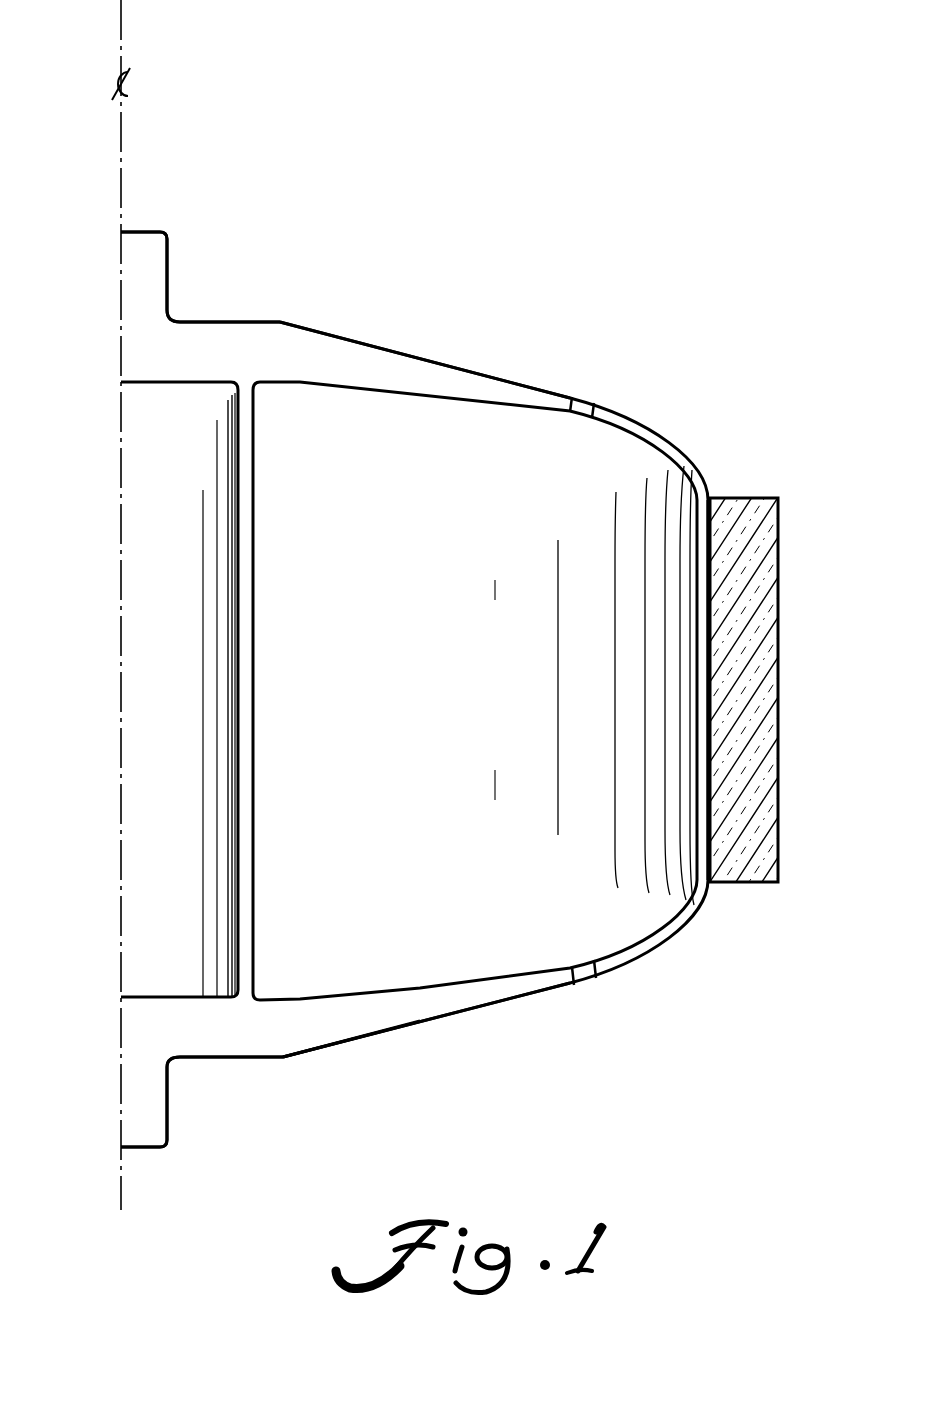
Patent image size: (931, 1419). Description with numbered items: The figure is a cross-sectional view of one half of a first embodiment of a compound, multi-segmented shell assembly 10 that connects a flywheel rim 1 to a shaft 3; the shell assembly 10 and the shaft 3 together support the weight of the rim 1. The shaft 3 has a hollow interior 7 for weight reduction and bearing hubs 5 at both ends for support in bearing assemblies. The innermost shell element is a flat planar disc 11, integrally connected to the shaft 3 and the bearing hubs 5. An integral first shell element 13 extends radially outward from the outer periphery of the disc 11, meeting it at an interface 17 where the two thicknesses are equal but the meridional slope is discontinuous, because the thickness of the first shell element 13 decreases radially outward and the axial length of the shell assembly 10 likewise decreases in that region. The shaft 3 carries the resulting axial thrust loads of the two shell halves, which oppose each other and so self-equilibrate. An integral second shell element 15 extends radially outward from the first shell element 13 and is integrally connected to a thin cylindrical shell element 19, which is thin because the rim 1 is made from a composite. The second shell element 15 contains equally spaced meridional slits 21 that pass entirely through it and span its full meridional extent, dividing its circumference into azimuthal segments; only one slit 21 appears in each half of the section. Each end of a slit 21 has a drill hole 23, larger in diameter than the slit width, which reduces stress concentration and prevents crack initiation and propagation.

The flywheel rim 1 is at (778, 550).
The shaft 3 is at (131, 347).
The bearing hubs 5 is at (168, 282).
The hollow interior 7 is at (180, 694).
The shell assembly 10 is at (437, 255).
The flat planar disc 11 is at (217, 1030).
The first shell element 13 is at (438, 1005).
The second shell element 15 is at (712, 946).
The interface 17 is at (283, 1062).
The cylindrical shell element 19 is at (707, 773).
The meridional slits 21 is at (634, 957).
The drill hole 23 is at (573, 975).